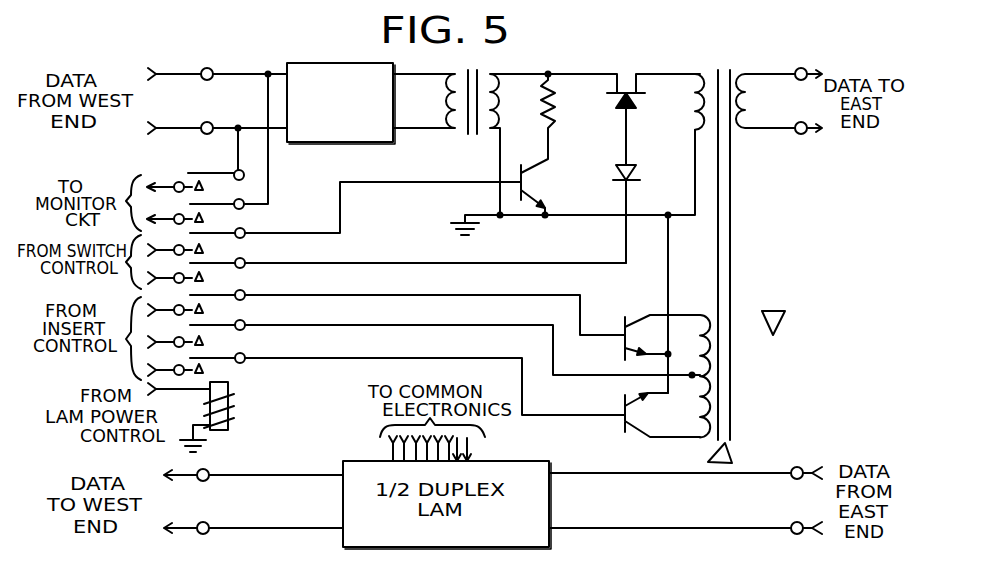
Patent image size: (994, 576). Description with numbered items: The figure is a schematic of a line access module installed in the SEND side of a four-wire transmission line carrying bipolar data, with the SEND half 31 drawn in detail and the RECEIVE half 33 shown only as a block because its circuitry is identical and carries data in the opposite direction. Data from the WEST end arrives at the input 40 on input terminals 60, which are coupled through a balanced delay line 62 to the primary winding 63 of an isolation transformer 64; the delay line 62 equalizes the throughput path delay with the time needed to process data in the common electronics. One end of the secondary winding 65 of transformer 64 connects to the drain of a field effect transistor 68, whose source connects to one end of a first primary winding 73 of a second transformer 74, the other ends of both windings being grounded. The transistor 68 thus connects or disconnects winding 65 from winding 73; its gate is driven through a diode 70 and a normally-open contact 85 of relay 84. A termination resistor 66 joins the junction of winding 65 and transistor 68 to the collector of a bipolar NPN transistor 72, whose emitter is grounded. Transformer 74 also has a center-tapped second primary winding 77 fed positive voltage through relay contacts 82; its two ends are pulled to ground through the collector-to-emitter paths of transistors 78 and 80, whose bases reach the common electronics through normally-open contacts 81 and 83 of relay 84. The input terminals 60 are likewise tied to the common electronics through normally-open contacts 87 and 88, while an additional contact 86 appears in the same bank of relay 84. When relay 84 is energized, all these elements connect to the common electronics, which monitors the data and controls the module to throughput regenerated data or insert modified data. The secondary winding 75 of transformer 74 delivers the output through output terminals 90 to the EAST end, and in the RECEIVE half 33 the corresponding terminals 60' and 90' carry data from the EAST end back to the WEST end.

The input 40 is at (181, 125).
The input terminals 60 is at (224, 101).
The balanced delay line 62 is at (314, 143).
The primary winding 63 is at (447, 118).
The isolation transformer 64 is at (464, 139).
The secondary winding 65 is at (492, 132).
The termination resistor 66 is at (552, 109).
The field effect transistor 68 is at (636, 101).
The diode 70 is at (632, 184).
The bipolar NPN transistor 72 is at (527, 182).
The first primary winding 73 is at (694, 119).
The transformer 74 is at (737, 188).
The secondary winding 75 is at (752, 118).
The second primary winding 77 is at (703, 316).
The transistor 78 is at (622, 332).
The transistor 80 is at (620, 426).
The normally-open relay contact 81 is at (212, 303).
The relay contacts 82 is at (212, 335).
The normally-open relay contact 83 is at (212, 363).
The relay 84 is at (238, 416).
The normally-open contact 85 is at (212, 271).
The switch control switch 86 is at (212, 243).
The normally-open contact 87 is at (212, 212).
The normally-open contact 88 is at (212, 180).
The output terminals 90 is at (794, 101).
The data to west end connectors 90' is at (253, 501).
The data from east end connectors 60' is at (685, 500).
The SEND half 31 is at (778, 325).
The RECEIVE half 33 is at (728, 452).